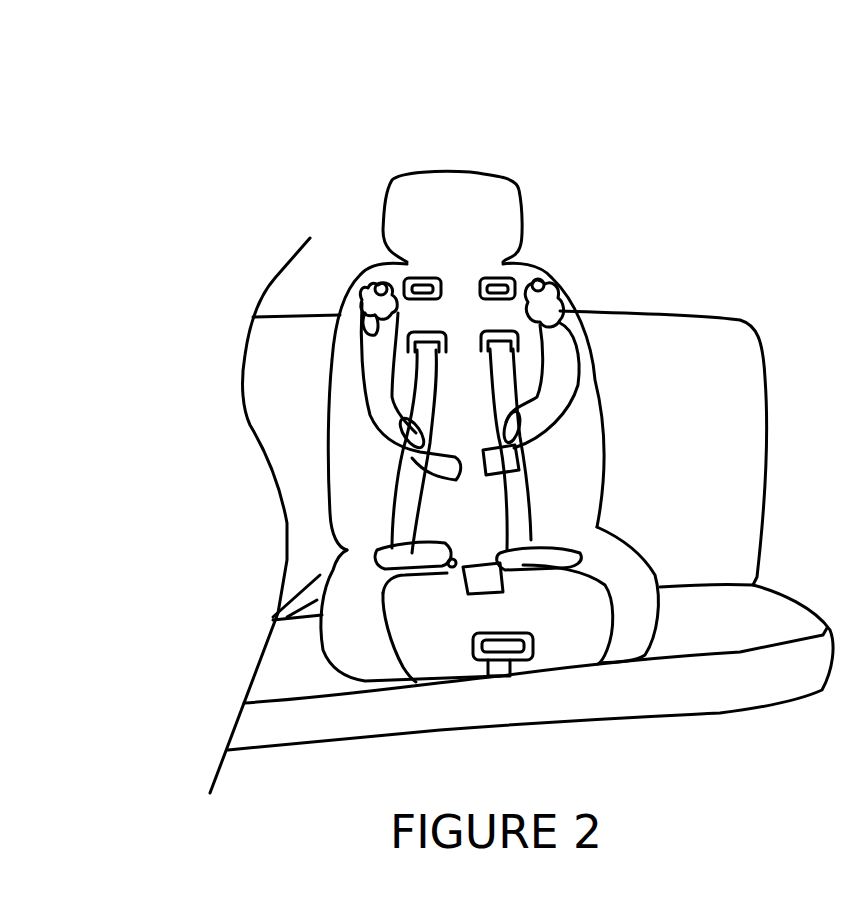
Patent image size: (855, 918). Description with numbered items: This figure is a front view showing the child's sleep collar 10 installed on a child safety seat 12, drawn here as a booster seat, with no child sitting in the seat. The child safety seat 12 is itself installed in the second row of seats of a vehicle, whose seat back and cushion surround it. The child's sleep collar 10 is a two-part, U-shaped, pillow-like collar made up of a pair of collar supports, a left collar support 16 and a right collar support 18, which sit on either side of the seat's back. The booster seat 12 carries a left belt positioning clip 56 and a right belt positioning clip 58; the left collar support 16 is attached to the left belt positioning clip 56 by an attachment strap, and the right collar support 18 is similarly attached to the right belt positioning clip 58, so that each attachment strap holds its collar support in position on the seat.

The child's sleep collar 10 is at (584, 320).
The child safety seat 12 is at (415, 225).
The left collar support 16 is at (565, 388).
The right collar support 18 is at (377, 370).
The left belt positioning clip 56 is at (547, 290).
The right belt positioning clip 58 is at (367, 280).